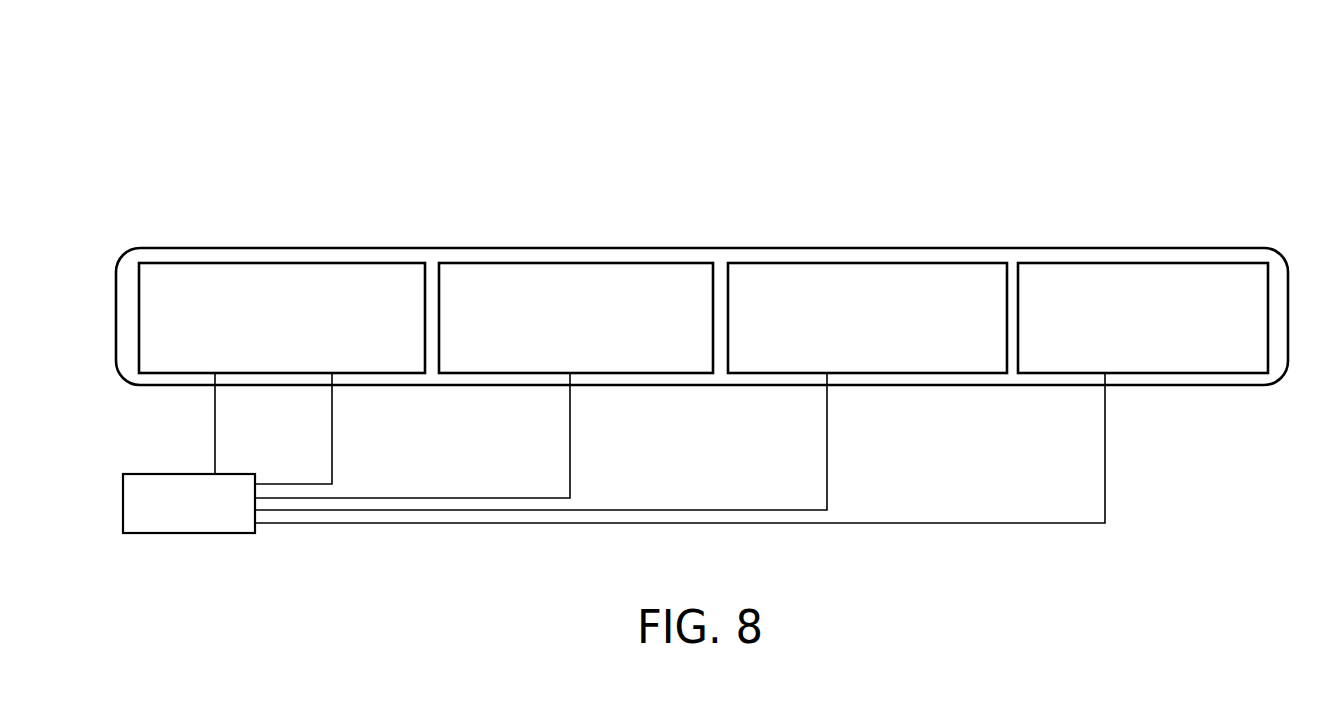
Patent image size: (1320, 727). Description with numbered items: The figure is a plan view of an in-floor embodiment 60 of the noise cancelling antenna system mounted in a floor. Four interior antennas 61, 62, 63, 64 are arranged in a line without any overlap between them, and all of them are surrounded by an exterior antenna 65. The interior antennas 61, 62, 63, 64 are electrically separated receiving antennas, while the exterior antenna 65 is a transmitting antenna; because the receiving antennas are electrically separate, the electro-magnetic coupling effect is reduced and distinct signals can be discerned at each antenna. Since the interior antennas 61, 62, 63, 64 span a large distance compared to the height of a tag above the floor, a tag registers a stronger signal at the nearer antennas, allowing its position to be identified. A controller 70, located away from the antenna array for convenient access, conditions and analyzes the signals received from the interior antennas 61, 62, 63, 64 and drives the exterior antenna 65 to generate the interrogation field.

The in-floor embodiment 60 is at (773, 88).
The interior antenna 61 is at (387, 263).
The interior antenna 62 is at (675, 263).
The interior antenna 63 is at (962, 263).
The interior antenna 64 is at (1230, 263).
The exterior antenna 65 is at (1230, 387).
The controller 70 is at (240, 472).